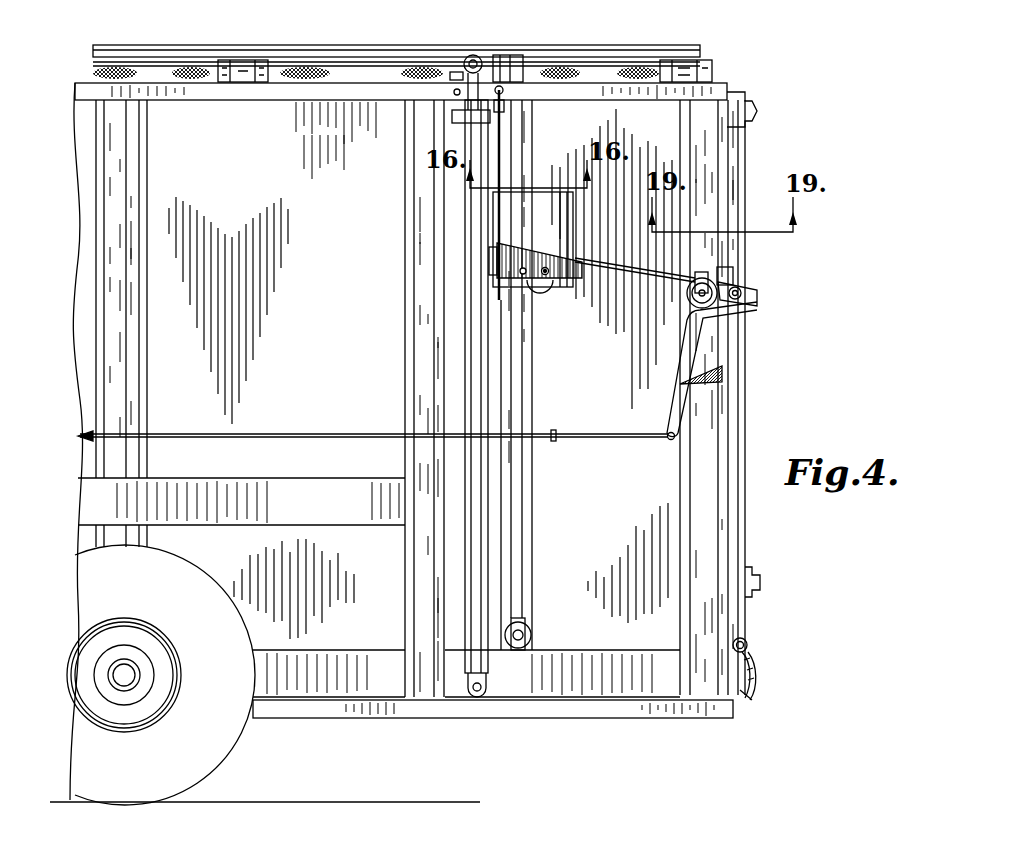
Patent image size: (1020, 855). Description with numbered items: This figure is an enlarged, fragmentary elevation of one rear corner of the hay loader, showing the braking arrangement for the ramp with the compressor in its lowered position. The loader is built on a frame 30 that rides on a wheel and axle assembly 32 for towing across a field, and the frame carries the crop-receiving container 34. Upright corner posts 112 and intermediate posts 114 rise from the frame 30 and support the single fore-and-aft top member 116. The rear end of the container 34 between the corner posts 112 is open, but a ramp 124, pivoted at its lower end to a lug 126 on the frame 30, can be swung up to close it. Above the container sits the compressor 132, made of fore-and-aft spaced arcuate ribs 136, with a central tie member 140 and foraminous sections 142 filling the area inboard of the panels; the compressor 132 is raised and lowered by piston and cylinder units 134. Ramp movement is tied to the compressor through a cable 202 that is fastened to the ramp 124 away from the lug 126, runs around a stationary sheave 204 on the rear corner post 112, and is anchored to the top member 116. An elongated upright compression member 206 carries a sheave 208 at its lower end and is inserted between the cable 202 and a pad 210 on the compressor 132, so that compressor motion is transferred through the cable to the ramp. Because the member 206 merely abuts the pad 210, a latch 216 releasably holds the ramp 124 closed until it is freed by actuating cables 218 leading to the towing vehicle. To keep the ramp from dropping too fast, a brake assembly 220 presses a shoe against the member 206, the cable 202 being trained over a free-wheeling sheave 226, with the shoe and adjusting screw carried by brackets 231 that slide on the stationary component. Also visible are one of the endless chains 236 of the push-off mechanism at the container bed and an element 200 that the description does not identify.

The frame 30 is at (372, 726).
The wheel and axle assembly 32 is at (245, 753).
The crop-receiving container 34 is at (70, 103).
The upright corner posts 112 is at (693, 542).
The intermediate posts 114 is at (125, 267).
The top member 116 is at (264, 100).
The ramp 124 is at (735, 397).
The lug 126 is at (747, 644).
The compressor 132 is at (628, 41).
The piston and cylinder units 134 is at (467, 396).
The arcuate ribs 136 is at (241, 60).
The central tie member 140 is at (115, 50).
The foraminous sections 142 is at (320, 70).
The pivot ring 200 is at (436, 70).
The cable 202 is at (615, 263).
The stationary sheave 204 is at (693, 288).
The compression member 206 is at (517, 141).
The sheave 208 is at (532, 635).
The pad 210 is at (508, 56).
The latch 216 is at (682, 353).
The actuating cables 218 is at (230, 434).
The brake assembly 220 is at (548, 248).
The free-wheeling sheave 226 is at (540, 284).
The brackets 231 is at (518, 246).
The endless chains 236 is at (755, 673).